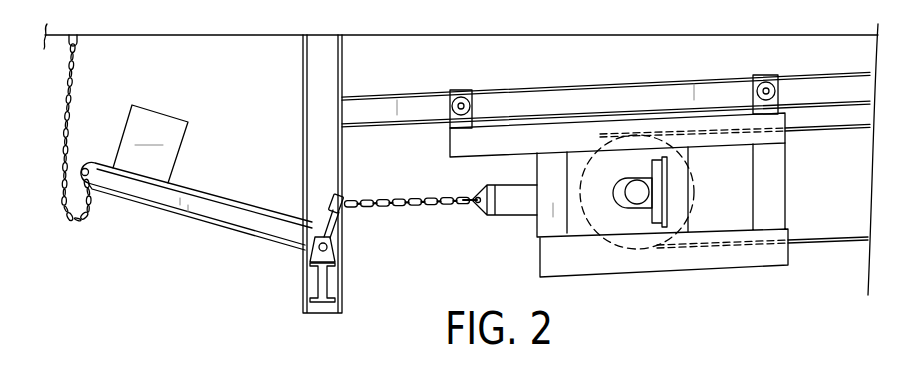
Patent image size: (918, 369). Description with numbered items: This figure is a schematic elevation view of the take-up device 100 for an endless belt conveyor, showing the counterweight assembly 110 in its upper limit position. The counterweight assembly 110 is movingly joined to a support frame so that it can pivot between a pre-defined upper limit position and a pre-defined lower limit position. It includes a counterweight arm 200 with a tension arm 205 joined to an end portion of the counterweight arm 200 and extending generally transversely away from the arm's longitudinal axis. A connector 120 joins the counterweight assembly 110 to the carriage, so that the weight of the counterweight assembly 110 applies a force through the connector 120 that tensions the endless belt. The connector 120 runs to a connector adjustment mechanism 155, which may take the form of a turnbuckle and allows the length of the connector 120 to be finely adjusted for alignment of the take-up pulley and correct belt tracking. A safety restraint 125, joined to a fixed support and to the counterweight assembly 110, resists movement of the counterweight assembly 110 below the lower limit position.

The take-up device 100 is at (652, 26).
The counterweight assembly 110 is at (191, 230).
The connector 120 is at (373, 210).
The safety restraint 125 is at (63, 127).
The connector adjustment mechanism 155 is at (505, 222).
The counterweight arm 200 is at (200, 192).
The tension arm 205 is at (337, 224).